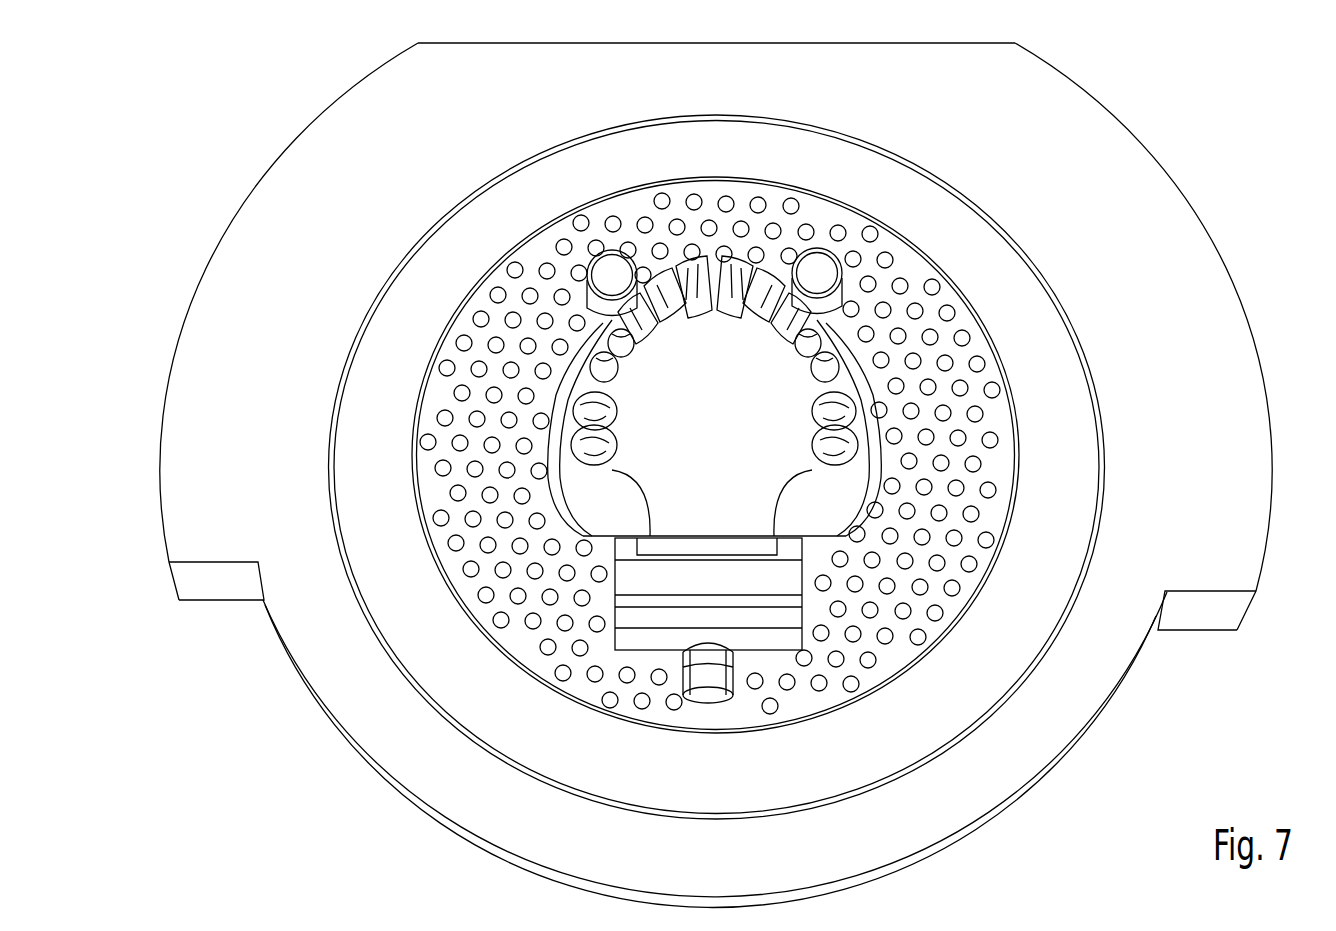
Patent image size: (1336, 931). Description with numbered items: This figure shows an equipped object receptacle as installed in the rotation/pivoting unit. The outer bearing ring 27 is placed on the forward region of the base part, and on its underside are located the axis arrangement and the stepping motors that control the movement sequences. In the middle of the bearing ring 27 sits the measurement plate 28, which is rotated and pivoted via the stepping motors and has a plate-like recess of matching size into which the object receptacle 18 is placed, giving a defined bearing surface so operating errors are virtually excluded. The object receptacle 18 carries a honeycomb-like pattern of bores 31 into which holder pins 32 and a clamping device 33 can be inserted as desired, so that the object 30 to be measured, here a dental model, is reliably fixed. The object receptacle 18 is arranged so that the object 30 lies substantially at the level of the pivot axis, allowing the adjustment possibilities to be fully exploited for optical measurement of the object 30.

The object receptacle 18 is at (926, 258).
The bearing ring 27 is at (1215, 248).
The measurement plate 28 is at (812, 128).
The object to be measured 30 is at (726, 433).
The bores 31 is at (470, 504).
The holder pins 32 is at (588, 268).
The clamping device 33 is at (618, 650).